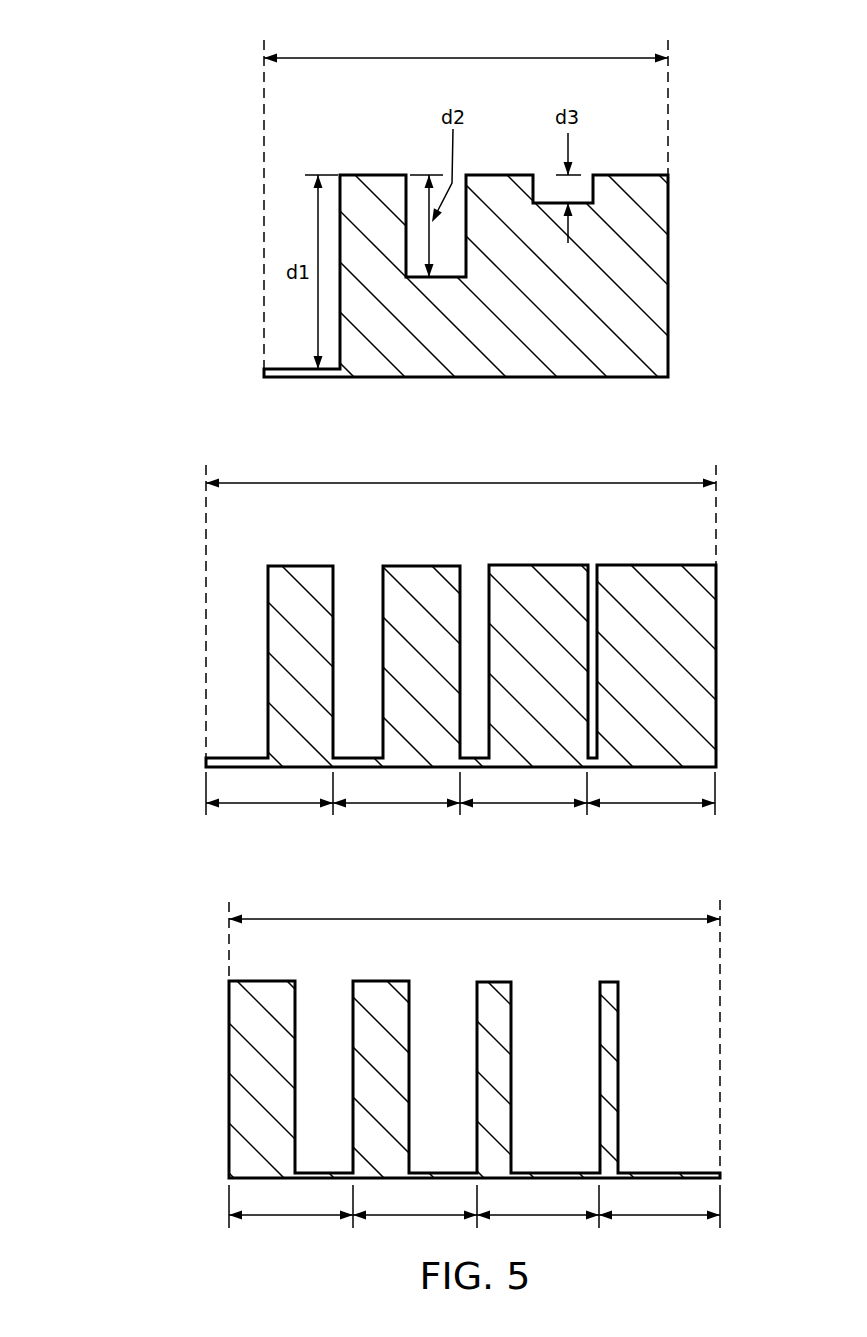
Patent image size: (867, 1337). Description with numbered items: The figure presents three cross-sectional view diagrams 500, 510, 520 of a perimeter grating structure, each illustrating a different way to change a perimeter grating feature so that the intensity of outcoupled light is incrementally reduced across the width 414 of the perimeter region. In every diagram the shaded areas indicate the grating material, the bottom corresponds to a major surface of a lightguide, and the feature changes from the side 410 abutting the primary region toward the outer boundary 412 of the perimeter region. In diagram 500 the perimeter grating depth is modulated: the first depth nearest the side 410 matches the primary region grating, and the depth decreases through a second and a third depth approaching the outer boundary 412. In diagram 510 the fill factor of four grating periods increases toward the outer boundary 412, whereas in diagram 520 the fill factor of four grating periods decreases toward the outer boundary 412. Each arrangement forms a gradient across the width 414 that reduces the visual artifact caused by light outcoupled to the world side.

The side abutting the primary region 410 is at (264, 102).
The outer boundary of the perimeter region 412 is at (668, 98).
The width of the perimeter region 414 is at (467, 57).
The cross-sectional view diagram 500 is at (182, 180).
The cross-sectional view diagram 510 is at (155, 582).
The cross-sectional view diagram 520 is at (155, 1083).